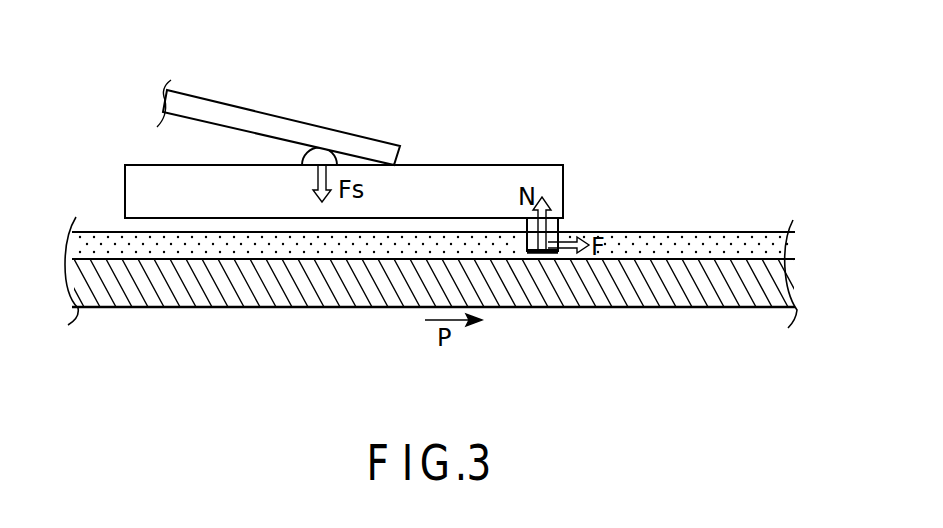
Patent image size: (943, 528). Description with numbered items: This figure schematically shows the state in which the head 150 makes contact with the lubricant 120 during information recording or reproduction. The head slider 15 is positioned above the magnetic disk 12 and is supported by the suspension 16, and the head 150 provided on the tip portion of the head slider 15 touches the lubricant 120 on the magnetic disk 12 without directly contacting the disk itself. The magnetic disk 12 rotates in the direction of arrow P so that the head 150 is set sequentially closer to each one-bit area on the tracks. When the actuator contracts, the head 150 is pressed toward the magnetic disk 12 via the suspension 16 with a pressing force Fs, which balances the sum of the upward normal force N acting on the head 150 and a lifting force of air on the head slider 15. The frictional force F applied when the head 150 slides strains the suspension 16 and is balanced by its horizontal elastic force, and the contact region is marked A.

The magnetic disk 12 is at (664, 297).
The lubricant 120 is at (728, 243).
The head slider 15 is at (521, 142).
The suspension 16 is at (257, 111).
The head 150 is at (560, 222).
The contact point A is at (534, 255).